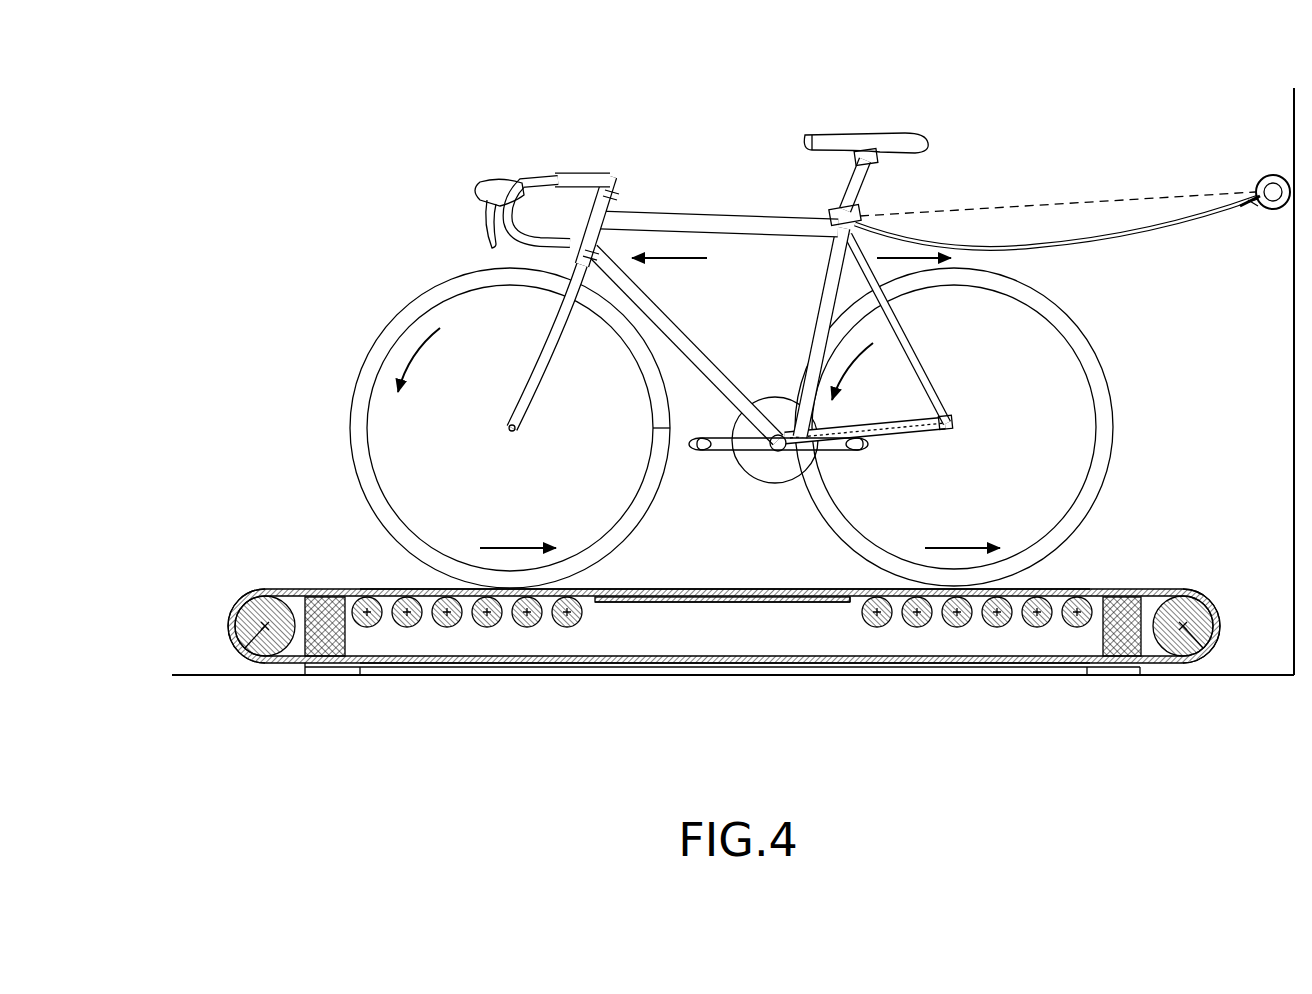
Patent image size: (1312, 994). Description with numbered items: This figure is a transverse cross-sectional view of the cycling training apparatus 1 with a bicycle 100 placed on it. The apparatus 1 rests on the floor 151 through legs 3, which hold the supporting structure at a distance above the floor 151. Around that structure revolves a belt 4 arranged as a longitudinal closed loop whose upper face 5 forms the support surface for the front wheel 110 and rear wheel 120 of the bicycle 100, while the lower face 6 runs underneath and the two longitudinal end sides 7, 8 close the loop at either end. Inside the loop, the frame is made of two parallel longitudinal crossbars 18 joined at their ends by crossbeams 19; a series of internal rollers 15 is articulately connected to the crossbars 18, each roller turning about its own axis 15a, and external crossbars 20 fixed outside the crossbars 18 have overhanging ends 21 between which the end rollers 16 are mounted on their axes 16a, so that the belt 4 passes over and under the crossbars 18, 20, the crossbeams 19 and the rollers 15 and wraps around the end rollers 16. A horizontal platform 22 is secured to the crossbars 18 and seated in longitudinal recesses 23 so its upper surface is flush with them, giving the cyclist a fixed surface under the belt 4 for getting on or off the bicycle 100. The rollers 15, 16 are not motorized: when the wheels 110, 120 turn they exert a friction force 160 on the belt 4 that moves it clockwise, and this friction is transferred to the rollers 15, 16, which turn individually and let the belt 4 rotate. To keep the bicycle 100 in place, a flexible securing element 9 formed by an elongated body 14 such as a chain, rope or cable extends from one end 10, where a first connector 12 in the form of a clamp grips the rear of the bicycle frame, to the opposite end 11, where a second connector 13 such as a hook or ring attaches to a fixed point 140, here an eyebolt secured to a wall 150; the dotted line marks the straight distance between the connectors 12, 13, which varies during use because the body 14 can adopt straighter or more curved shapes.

The cycling training apparatus 1 is at (388, 125).
The legs 3 is at (332, 675).
The belt 4 is at (720, 668).
The upper face 5 is at (726, 592).
The lower face 6 is at (598, 660).
The longitudinal end side 7 is at (240, 628).
The longitudinal end side 8 is at (1222, 650).
The securing element 9 is at (1038, 236).
The end of securing element 10 is at (874, 198).
The opposite end of securing element 11 is at (1246, 188).
The first connector 12 is at (838, 203).
The second connector 13 is at (1252, 208).
The elongated body 14 is at (1143, 229).
The internal rollers 15 is at (410, 622).
The support roller axles 15a is at (405, 627).
The end rollers 16 is at (243, 605).
The roller axle 16a is at (255, 636).
The longitudinal crossbars 18 is at (840, 638).
The crossbeams 19 is at (322, 650).
The external crossbars 20 is at (300, 592).
The overhanging ends 21 is at (724, 626).
The horizontal platform 22 is at (768, 603).
The longitudinal recesses 23 is at (658, 604).
The bicycle 100 is at (744, 342).
The front wheel 110 is at (395, 322).
The rear wheel 120 is at (1085, 322).
The fixed point 140 is at (1268, 176).
The wall 150 is at (1294, 372).
The floor 151 is at (190, 675).
The friction force 160 is at (490, 548).